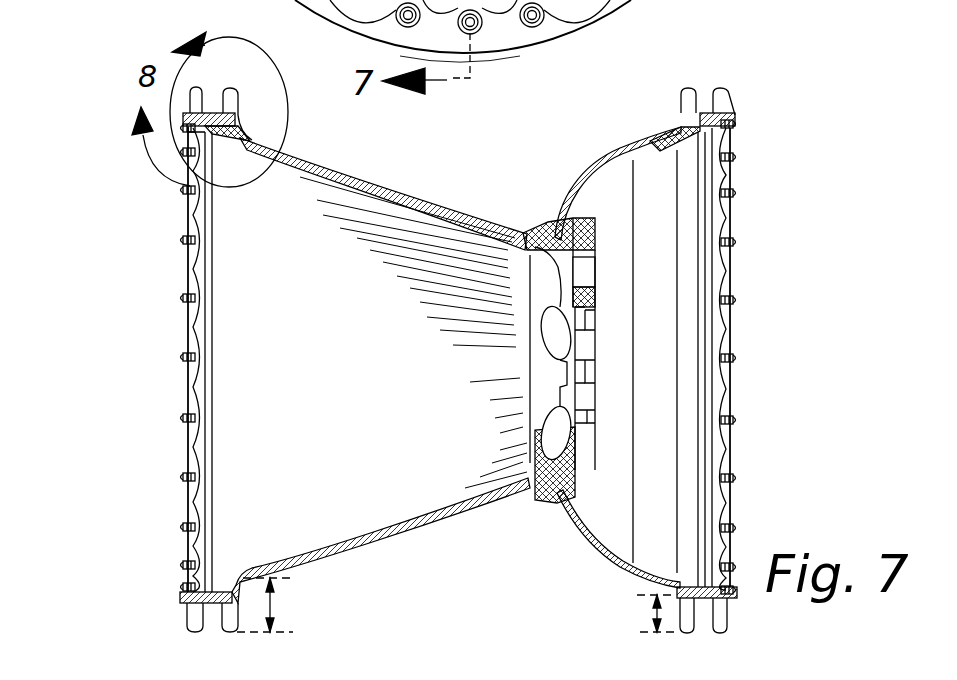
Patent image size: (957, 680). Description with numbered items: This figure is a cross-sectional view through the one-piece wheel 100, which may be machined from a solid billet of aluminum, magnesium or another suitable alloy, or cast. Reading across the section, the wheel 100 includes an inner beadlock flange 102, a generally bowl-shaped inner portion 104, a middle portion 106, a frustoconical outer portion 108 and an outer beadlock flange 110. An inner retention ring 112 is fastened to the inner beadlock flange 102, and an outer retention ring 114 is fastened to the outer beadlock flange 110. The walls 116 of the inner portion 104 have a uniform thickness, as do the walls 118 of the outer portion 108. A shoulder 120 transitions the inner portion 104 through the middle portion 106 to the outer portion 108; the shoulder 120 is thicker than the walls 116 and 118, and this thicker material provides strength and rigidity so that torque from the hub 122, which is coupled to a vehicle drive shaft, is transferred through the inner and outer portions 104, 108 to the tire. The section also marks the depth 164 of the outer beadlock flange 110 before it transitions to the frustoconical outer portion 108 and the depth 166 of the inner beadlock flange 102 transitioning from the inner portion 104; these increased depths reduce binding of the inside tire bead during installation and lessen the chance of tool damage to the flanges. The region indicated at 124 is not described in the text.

The wheel 100 is at (90, 72).
The inner beadlock flange 102 is at (685, 90).
The inner portion 104 is at (617, 143).
The middle portion 106 is at (543, 230).
The outer portion 108 is at (397, 197).
The outer beadlock flange 110 is at (238, 88).
The inner retention ring 112 is at (727, 97).
The outer retention ring 114 is at (188, 263).
The walls of the inner portion 116 is at (600, 557).
The walls of the outer portion 118 is at (360, 533).
The shoulder 120 is at (560, 503).
The hub 122 is at (485, 359).
The bore 124 is at (618, 363).
The depth of the outer beadlock flange 164 is at (278, 605).
The depth of the inner beadlock flange 166 is at (653, 613).